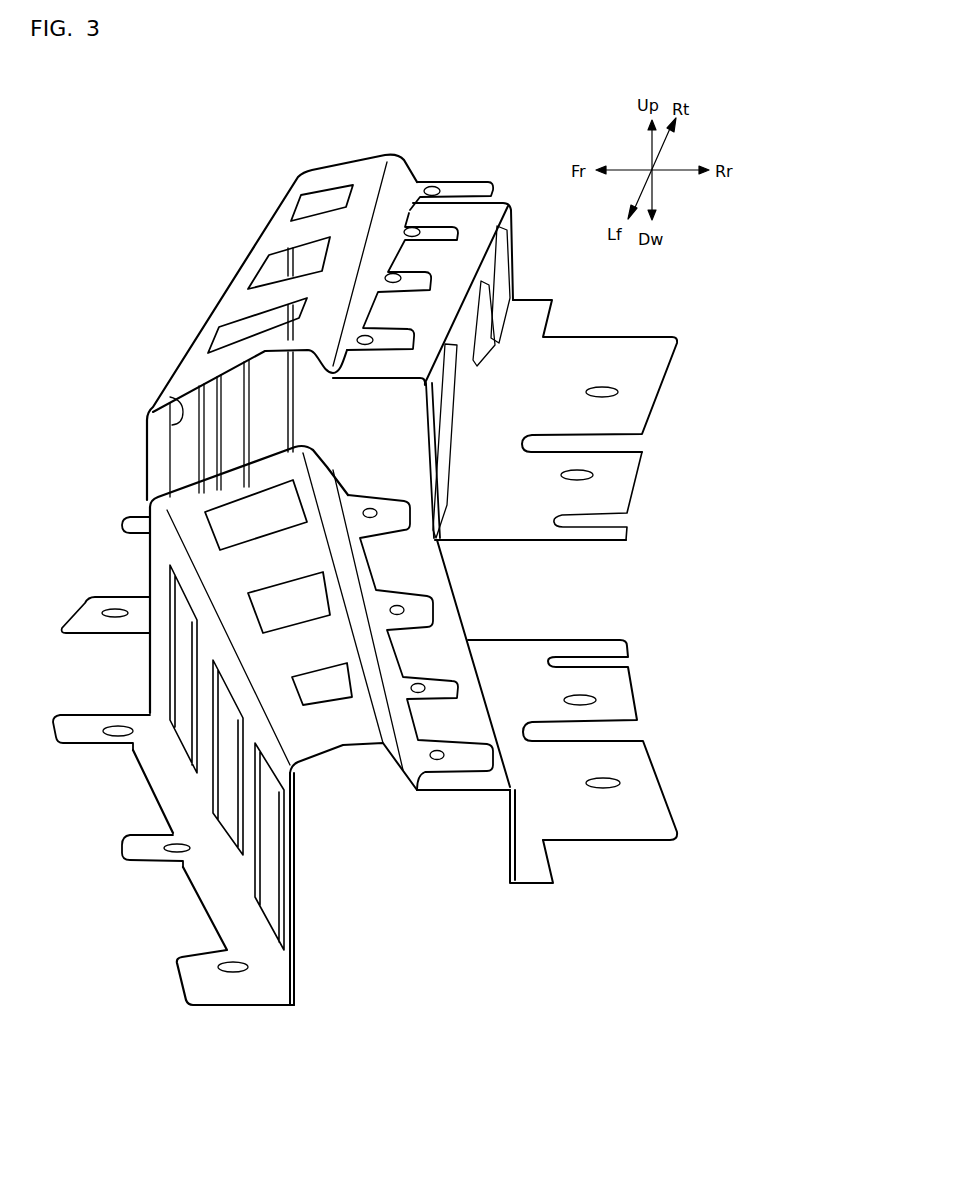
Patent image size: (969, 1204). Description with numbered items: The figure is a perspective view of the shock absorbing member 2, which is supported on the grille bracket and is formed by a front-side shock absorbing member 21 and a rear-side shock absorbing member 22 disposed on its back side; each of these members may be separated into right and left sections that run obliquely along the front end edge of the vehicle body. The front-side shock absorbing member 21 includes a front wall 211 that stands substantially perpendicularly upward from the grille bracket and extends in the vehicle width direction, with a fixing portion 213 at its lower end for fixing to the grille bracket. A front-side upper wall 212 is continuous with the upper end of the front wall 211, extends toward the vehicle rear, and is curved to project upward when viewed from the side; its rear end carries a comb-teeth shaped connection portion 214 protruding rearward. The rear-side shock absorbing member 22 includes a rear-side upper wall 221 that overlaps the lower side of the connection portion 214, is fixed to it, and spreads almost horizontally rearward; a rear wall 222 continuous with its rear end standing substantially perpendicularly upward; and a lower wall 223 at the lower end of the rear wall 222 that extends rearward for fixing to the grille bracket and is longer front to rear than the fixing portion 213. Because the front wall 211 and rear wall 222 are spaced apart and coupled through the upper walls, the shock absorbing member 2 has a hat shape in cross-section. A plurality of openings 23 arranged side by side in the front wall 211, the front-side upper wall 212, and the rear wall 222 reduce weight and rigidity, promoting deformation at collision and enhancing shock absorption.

The shock absorbing member 2 is at (365, 592).
The front-side shock absorbing member 21 is at (287, 592).
The rear-side shock absorbing member 22 is at (505, 572).
The opening 23 is at (263, 268).
The front wall 211 is at (147, 443).
The front-side upper wall 212 is at (232, 301).
The fixing portion 213 is at (93, 597).
The connection portion 214 is at (473, 190).
The rear-side upper wall 221 is at (391, 383).
The rear wall 222 is at (513, 256).
The lower wall 223 is at (633, 337).